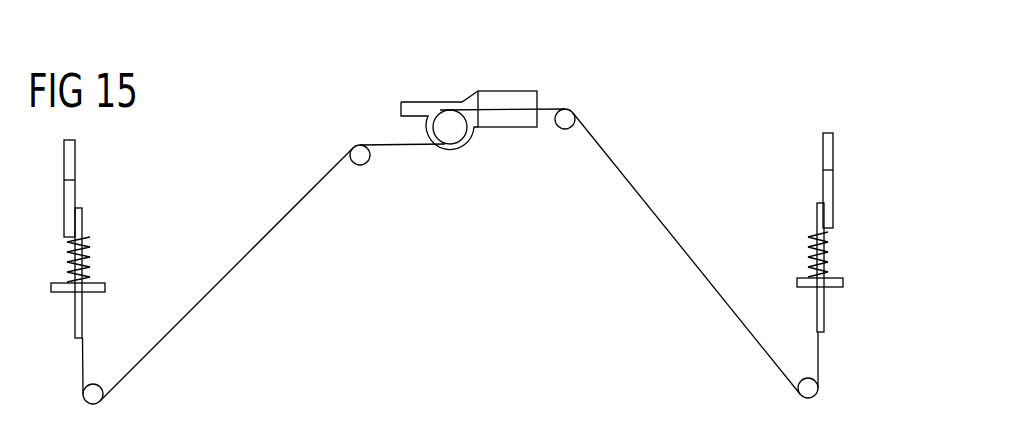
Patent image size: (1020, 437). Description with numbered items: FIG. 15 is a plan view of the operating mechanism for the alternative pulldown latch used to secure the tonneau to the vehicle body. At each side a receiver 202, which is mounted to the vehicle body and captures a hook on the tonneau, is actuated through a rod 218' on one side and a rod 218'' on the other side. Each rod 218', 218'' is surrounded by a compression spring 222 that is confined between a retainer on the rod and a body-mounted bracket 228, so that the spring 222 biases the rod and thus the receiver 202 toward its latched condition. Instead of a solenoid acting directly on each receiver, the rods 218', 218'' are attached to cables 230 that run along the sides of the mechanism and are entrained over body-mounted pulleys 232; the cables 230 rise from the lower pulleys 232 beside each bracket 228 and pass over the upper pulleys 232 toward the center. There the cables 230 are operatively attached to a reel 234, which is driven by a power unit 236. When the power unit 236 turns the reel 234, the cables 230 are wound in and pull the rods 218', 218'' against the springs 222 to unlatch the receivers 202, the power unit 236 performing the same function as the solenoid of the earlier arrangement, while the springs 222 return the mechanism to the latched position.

The receiver 202 is at (75, 182).
The rod 218' is at (131, 252).
The rod 218'' is at (771, 253).
The compression spring 222 is at (90, 247).
The body-mounted bracket 228 is at (103, 284).
The cable 230 is at (213, 291).
The pulley 232 is at (103, 398).
The reel 234 is at (450, 133).
The power unit 236 is at (518, 97).